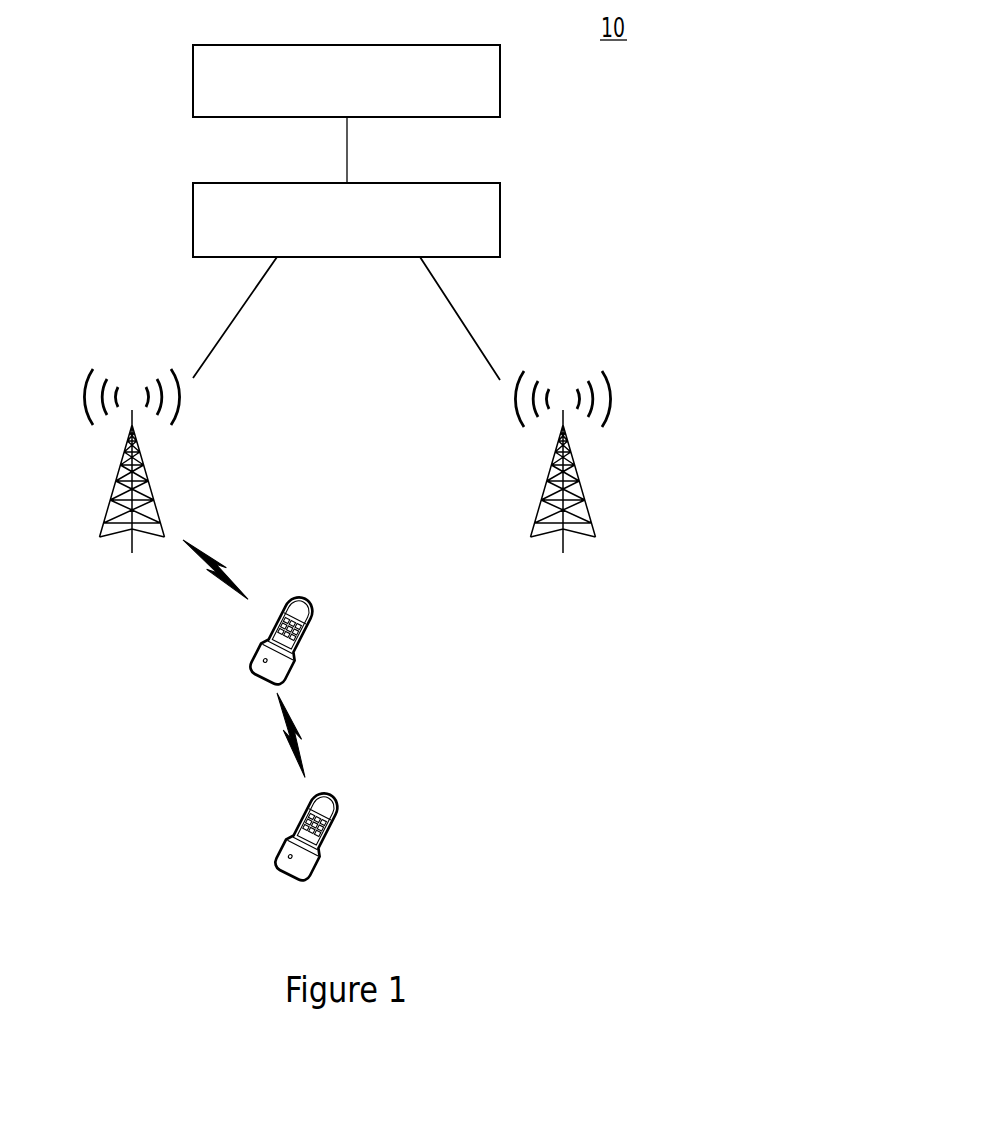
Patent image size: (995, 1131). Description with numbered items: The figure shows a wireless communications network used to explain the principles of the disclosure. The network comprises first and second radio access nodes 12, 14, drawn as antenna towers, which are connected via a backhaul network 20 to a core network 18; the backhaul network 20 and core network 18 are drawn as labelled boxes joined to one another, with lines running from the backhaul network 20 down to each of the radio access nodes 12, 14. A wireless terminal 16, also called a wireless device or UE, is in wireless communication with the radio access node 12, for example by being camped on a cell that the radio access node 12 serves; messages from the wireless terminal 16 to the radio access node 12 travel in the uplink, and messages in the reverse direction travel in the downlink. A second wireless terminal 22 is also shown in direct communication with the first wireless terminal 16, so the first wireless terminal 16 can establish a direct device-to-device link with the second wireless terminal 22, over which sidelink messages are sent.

The first radio access node 12 is at (102, 458).
The second radio access node 14 is at (590, 457).
The wireless terminal 16 is at (250, 628).
The core network 18 is at (193, 72).
The backhaul network 20 is at (193, 212).
The second wireless terminal 22 is at (275, 822).